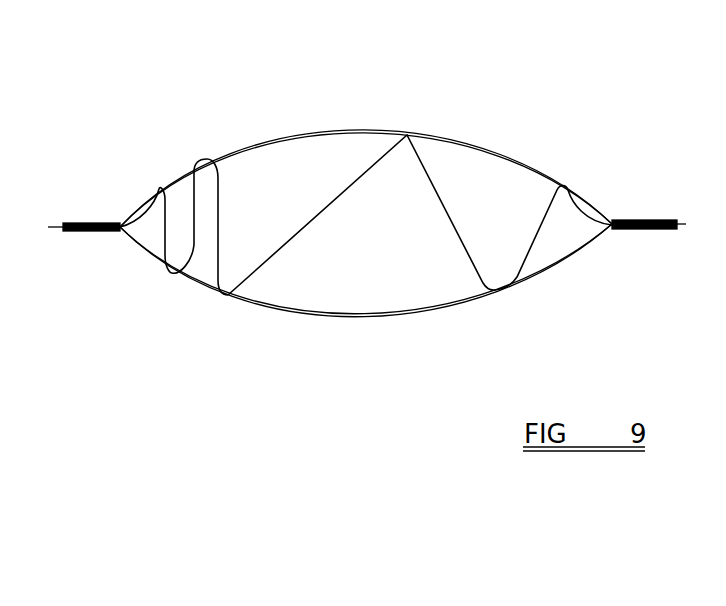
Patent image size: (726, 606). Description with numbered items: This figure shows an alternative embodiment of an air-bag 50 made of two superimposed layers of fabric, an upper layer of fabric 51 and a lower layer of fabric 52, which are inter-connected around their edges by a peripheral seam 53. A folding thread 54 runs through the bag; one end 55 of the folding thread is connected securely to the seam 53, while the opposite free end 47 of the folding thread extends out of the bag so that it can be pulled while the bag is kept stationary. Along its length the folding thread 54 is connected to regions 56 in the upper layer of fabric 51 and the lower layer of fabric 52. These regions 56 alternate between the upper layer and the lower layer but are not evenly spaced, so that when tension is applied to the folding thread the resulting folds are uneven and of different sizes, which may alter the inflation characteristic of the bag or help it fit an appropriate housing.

The free end 47 is at (683, 224).
The air-bag 50 is at (427, 112).
The upper layer of fabric 51 is at (562, 184).
The lower layer of fabric 52 is at (462, 307).
The peripheral seam 53 is at (95, 222).
The folding thread 54 is at (217, 263).
The end of the folding thread 55 is at (120, 232).
The regions 56 is at (159, 187).